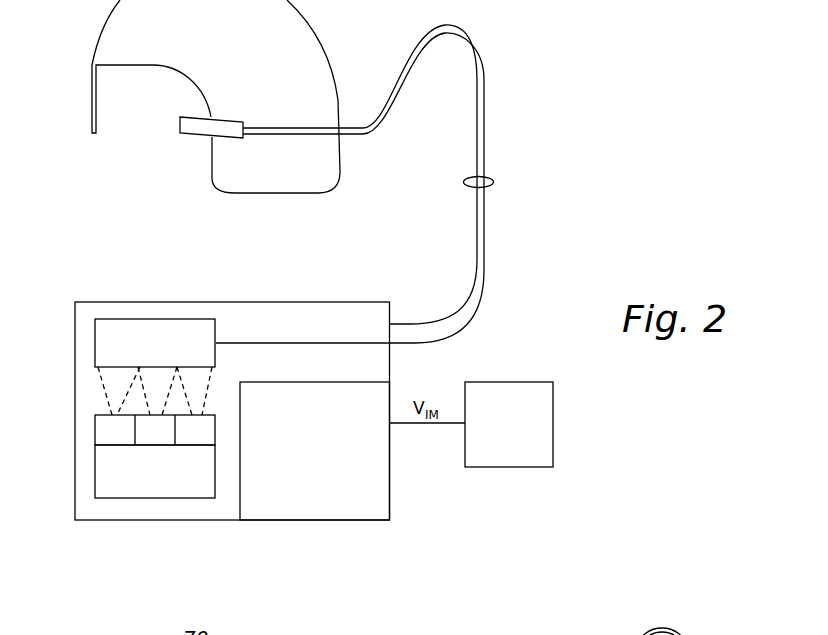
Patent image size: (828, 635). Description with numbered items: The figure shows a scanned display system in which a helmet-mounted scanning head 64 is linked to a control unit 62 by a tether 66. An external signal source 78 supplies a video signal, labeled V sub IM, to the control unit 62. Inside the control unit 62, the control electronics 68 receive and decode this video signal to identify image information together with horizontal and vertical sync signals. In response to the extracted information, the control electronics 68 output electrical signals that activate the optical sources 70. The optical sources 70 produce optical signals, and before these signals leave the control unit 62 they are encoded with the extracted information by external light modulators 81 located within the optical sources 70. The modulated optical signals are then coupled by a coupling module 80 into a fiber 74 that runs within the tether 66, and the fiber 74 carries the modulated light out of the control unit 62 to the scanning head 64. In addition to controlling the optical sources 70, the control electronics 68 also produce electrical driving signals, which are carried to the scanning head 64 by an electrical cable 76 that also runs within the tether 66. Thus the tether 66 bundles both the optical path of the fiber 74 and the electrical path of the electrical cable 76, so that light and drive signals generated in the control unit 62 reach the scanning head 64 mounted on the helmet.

The control unit 62 is at (73, 383).
The scanning head 64 is at (230, 118).
The tether 66 is at (493, 183).
The control electronics 68 is at (298, 463).
The optical sources 70 is at (105, 500).
The fiber 74 is at (482, 72).
The electrical cable 76 is at (478, 123).
The external signal source 78 is at (553, 412).
The coupling module 80 is at (153, 319).
The external light modulators 81 is at (104, 441).